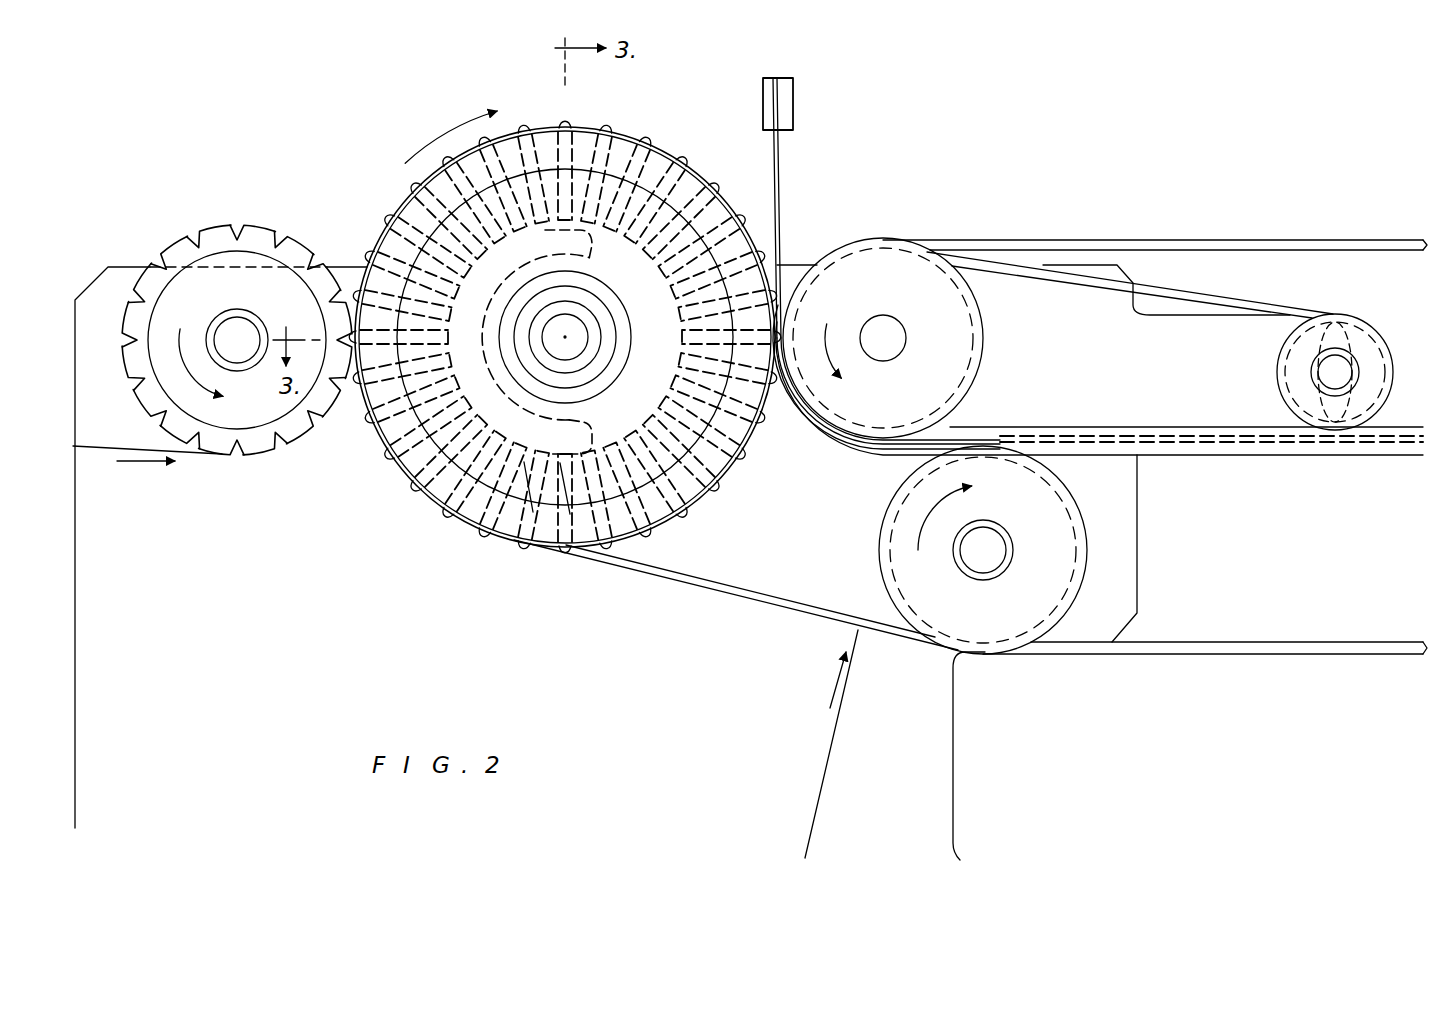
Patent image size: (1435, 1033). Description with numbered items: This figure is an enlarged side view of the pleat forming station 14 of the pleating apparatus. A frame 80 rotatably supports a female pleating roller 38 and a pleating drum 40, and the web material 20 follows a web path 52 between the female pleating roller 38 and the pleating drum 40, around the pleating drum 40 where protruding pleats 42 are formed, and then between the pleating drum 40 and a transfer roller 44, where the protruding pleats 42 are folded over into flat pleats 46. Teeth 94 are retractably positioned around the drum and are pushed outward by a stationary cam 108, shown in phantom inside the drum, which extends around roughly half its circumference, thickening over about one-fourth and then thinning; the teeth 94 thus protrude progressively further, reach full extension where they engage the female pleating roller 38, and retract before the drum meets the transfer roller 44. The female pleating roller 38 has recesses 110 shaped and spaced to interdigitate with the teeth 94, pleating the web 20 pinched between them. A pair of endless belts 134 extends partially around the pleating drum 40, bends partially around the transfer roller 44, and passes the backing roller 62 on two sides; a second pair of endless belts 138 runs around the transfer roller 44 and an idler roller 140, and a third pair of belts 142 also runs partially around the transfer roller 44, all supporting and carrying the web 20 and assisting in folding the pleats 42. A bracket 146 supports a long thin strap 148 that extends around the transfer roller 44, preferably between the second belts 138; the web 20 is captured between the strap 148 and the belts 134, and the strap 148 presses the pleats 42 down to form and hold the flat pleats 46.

The pleat forming station 14 is at (316, 144).
The web material 20 is at (103, 448).
The female pleating roller 38 is at (173, 248).
The pleating drum 40 is at (437, 515).
The protruding pleats 42 is at (665, 147).
The transfer roller 44 is at (880, 242).
The flat pleats 46 is at (1245, 455).
The web path 52 is at (831, 745).
The backing roller 62 is at (993, 630).
The frame 80 is at (75, 594).
The teeth 94 is at (390, 462).
The cam 108 is at (532, 528).
The recesses 110 is at (320, 267).
The endless belts 134 is at (813, 433).
The second pair of endless belts 138 is at (1228, 295).
The idler roller 140 is at (1357, 320).
The third pair of belts 142 is at (1170, 243).
The bracket 146 is at (788, 95).
The strap 148 is at (777, 185).